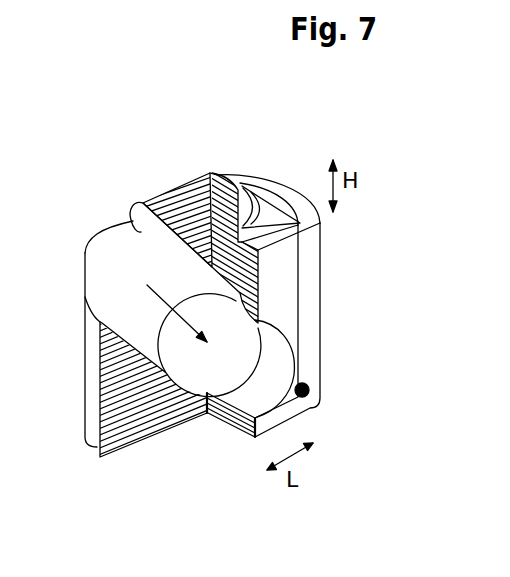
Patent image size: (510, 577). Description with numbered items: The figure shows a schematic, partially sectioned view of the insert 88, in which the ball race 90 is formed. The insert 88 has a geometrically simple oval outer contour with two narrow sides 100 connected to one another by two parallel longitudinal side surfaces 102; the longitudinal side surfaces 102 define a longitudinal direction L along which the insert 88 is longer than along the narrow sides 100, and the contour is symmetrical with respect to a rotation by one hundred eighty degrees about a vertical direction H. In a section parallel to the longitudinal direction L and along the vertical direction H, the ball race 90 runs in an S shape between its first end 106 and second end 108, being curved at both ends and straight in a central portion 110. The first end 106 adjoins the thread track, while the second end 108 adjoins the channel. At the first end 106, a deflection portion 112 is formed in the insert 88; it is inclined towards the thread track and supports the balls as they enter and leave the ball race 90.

The insert 88 is at (297, 152).
The ball race 90 is at (122, 248).
The narrow side 100 is at (85, 407).
The longitudinal side surface 102 is at (306, 398).
The first end 106 is at (110, 276).
The second end 108 is at (286, 325).
The central portion 110 is at (190, 340).
The deflection portion 112 is at (163, 186).